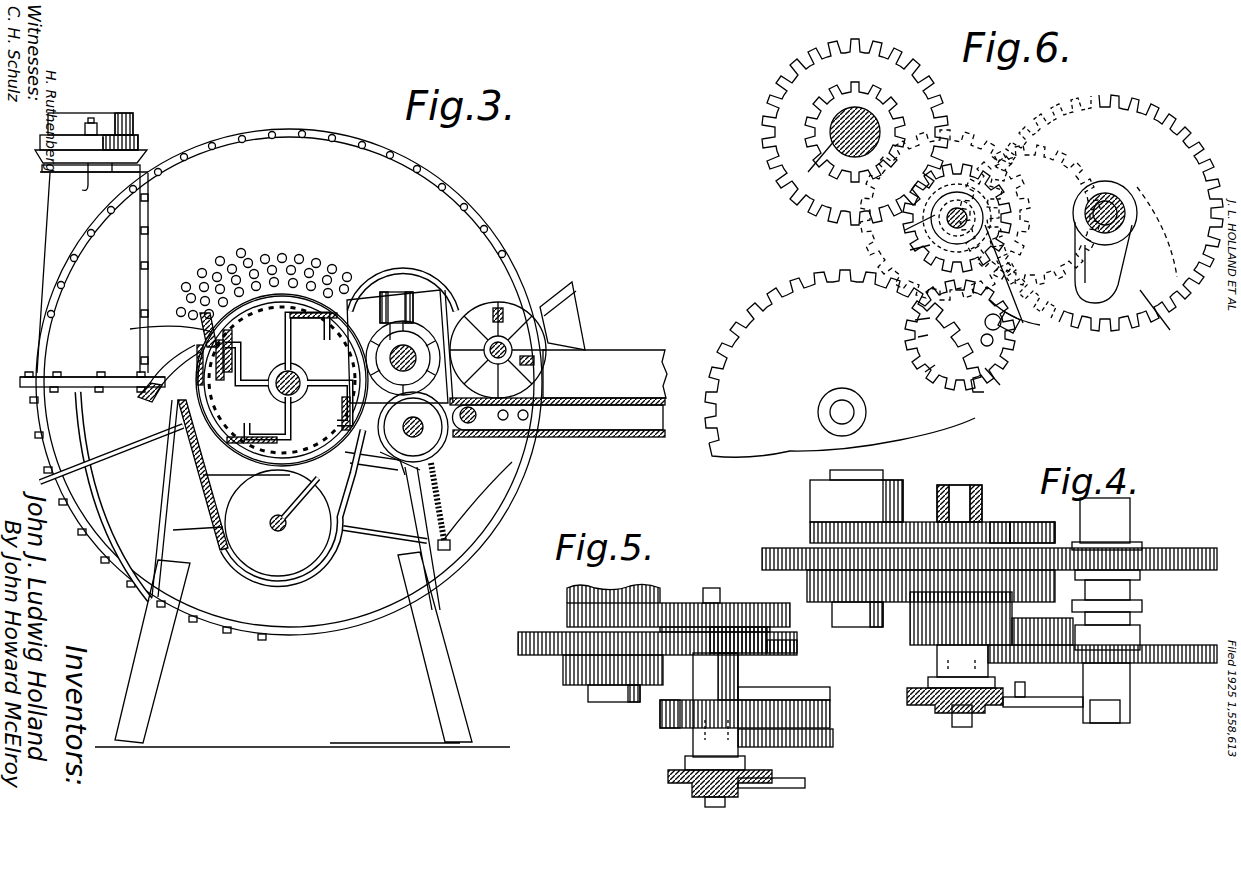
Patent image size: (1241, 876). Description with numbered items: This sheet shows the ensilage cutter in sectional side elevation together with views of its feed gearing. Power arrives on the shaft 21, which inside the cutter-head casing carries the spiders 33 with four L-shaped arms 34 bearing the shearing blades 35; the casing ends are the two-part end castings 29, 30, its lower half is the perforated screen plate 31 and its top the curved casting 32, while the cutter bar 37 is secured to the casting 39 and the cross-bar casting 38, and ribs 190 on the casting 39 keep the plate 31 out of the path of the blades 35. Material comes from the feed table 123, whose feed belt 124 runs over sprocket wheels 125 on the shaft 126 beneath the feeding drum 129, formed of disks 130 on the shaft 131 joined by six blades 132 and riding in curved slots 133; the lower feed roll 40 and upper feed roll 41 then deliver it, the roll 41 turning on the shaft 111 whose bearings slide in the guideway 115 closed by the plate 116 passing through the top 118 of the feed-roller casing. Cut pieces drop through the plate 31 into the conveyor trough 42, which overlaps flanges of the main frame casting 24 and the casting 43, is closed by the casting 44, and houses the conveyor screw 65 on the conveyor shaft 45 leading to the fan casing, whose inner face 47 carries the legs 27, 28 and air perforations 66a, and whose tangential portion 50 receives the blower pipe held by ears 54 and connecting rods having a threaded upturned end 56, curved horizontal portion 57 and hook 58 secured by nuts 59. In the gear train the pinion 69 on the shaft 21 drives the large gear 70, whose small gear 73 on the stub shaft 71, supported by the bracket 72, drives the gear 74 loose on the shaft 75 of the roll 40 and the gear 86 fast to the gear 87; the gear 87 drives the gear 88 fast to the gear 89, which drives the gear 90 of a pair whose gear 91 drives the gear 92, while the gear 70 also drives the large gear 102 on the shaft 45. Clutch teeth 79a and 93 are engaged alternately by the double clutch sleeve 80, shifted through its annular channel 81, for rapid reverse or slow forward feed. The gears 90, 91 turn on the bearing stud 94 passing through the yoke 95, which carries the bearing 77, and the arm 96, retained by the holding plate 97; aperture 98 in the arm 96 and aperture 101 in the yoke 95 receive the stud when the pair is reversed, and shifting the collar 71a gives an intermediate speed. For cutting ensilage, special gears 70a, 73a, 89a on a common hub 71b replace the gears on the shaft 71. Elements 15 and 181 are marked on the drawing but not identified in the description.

In FIG. 3, the wheel 15 is at (413, 427).
In FIG. 3, the shaft 21 is at (280, 390).
In FIG. 6, the shaft 21 is at (814, 164).
In FIG. 5, the shaft 21 is at (610, 700).
In FIG. 4, the shaft 21 is at (812, 475).
In FIG. 3, the main frame casting 24 is at (138, 410).
In FIG. 3, the leg 27 is at (160, 665).
In FIG. 3, the leg 28 is at (420, 630).
In FIG. 3, the two-part end casting 29 is at (240, 370).
In FIG. 4, the two-part end casting 30 is at (962, 490).
In FIG. 3, the perforated curved plate 31 is at (222, 440).
In FIG. 3, the curved casting 32 is at (280, 300).
In FIG. 3, the end castings or spiders 33 is at (316, 350).
In FIG. 3, the L-shaped arms 34 is at (300, 330).
In FIG. 3, the shearing blades 35 is at (233, 335).
In FIG. 3, the cutter bar 37 is at (205, 328).
In FIG. 3, the cross-bar casting 38 is at (390, 465).
In FIG. 3, the casting 39 is at (178, 360).
In FIG. 3, the lower feed roll 40 is at (432, 460).
In FIG. 3, the upper feed roll 41 is at (430, 340).
In FIG. 3, the conveyor trough 42 is at (330, 570).
In FIG. 3, the casting 43 is at (350, 460).
In FIG. 3, the casting 44 is at (322, 630).
In FIG. 3, the conveyor shaft 45 is at (278, 523).
In FIG. 3, the inner face of fan-wheel casing 47 is at (154, 501).
In FIG. 3, the tangential portion 50 is at (58, 232).
In FIG. 3, the radial projections or ears 54 is at (122, 130).
In FIG. 3, the threaded upturned end 56 is at (135, 145).
In FIG. 3, the curved horizontal portion 57 is at (118, 172).
In FIG. 3, the hook 58 is at (88, 186).
In FIG. 3, the nuts 59 is at (96, 126).
In FIG. 3, the conveyor screw 65 is at (300, 492).
In FIG. 3, the perforations 66a is at (268, 256).
In FIG. 6, the spur gear pinion 69 is at (890, 95).
In FIG. 5, the spur gear pinion 69 is at (568, 612).
In FIG. 4, the spur gear pinion 69 is at (812, 530).
In FIG. 6, the large gear 70 is at (992, 140).
In FIG. 4, the large gear 70 is at (996, 535).
In FIG. 5, the special gear 70a is at (670, 600).
In FIG. 6, the stub shaft 71 is at (911, 223).
In FIG. 5, the stub shaft 71 is at (710, 590).
In FIG. 4, the stub shaft 71 is at (955, 490).
In FIG. 4, the collar 71a is at (1018, 700).
In FIG. 5, the common hub 71b is at (732, 676).
In FIG. 5, the bracket 72 is at (712, 808).
In FIG. 4, the bracket 72 is at (955, 728).
In FIG. 4, the small gear 73 is at (1015, 545).
In FIG. 5, the special gear 73a is at (740, 625).
In FIG. 6, the spur gear wheel 74 is at (1130, 108).
In FIG. 5, the spur gear wheel 74 is at (798, 650).
In FIG. 4, the spur gear wheel 74 is at (1190, 548).
In FIG. 6, the shaft 75 is at (1105, 195).
In FIG. 4, the shaft 75 is at (1130, 592).
In FIG. 6, the bearing 77 is at (1122, 200).
In FIG. 4, the clutch teeth 79a is at (1138, 578).
In FIG. 4, the double clutch sleeve 80 is at (1142, 605).
In FIG. 4, the annular channel 81 is at (1130, 618).
In FIG. 6, the larger spur gear wheel 86 is at (870, 40).
In FIG. 5, the larger spur gear wheel 86 is at (540, 656).
In FIG. 4, the larger spur gear wheel 86 is at (989, 559).
In FIG. 6, the smaller spur gear wheel 87 is at (862, 82).
In FIG. 5, the smaller spur gear wheel 87 is at (565, 685).
In FIG. 4, the smaller spur gear wheel 87 is at (931, 586).
In FIG. 6, the larger spur gear wheel 88 is at (957, 160).
In FIG. 4, the larger spur gear wheel 88 is at (912, 628).
In FIG. 4, the smaller spur gear wheel 89 is at (925, 650).
In FIG. 5, the special gear 89a is at (662, 728).
In FIG. 6, the larger spur gear wheel 90 is at (925, 350).
In FIG. 5, the larger spur gear wheel 90 is at (822, 712).
In FIG. 4, the larger spur gear wheel 90 is at (1040, 628).
In FIG. 6, the smaller spur gear wheel 91 is at (918, 375).
In FIG. 5, the smaller spur gear wheel 91 is at (790, 752).
In FIG. 4, the smaller spur gear wheel 91 is at (1040, 665).
In FIG. 6, the larger spur gear wheel 92 is at (1190, 300).
In FIG. 5, the larger spur gear wheel 92 is at (812, 760).
In FIG. 4, the larger spur gear wheel 92 is at (1185, 665).
In FIG. 4, the clutch teeth 93 is at (1140, 640).
In FIG. 6, the bearing stud 94 is at (908, 339).
In FIG. 6, the yoke 95 is at (1092, 240).
In FIG. 4, the yoke 95 is at (1055, 708).
In FIG. 6, the arm 96 is at (910, 249).
In FIG. 4, the arm 96 is at (925, 700).
In FIG. 6, the holding plate 97 is at (906, 321).
In FIG. 6, the aperture 98 is at (1020, 275).
In FIG. 6, the aperture 101 is at (1003, 388).
In FIG. 6, the large spur gear wheel 102 is at (844, 363).
In FIG. 3, the shaft 111 is at (396, 320).
In FIG. 3, the guideway 115 is at (440, 288).
In FIG. 3, the plate 116 is at (406, 350).
In FIG. 3, the top of the feed-roller casing 118 is at (372, 290).
In FIG. 3, the feed table 123 is at (617, 366).
In FIG. 3, the feed belt 124 is at (605, 430).
In FIG. 3, the sprocket wheels 125 is at (480, 420).
In FIG. 3, the shaft 126 is at (481, 500).
In FIG. 3, the feeding drum 129 is at (550, 330).
In FIG. 3, the disks 130 is at (520, 312).
In FIG. 3, the shaft 131 is at (574, 288).
In FIG. 3, the blades 132 is at (538, 360).
In FIG. 3, the curved slots 133 is at (495, 305).
In FIG. 3, the bracket 181 is at (153, 399).
In FIG. 3, the ribs 190 is at (155, 328).